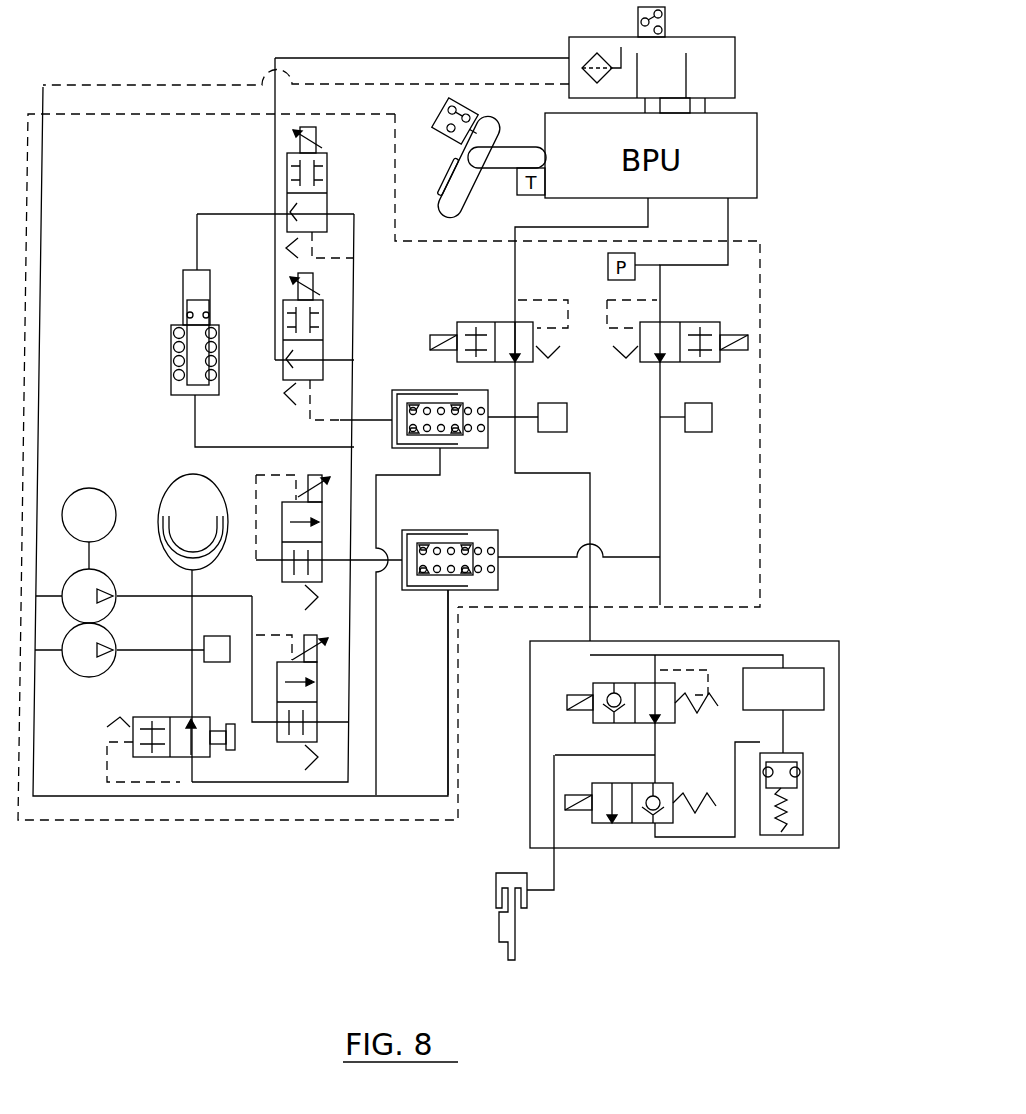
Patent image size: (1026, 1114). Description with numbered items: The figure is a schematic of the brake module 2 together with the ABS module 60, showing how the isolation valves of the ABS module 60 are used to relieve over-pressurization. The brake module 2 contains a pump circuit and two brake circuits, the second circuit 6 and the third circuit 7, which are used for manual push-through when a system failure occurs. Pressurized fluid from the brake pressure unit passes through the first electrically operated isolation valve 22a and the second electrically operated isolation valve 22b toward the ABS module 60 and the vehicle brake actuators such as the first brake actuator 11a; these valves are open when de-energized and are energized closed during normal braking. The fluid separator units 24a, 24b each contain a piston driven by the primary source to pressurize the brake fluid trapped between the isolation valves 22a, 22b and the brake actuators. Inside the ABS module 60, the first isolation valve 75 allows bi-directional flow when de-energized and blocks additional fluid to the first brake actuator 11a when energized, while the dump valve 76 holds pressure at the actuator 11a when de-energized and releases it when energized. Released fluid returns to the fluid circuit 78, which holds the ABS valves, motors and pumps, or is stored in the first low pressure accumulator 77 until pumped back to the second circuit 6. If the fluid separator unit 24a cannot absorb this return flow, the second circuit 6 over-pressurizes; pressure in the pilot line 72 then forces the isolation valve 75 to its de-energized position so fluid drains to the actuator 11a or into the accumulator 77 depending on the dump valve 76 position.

The brake module 2 is at (238, 827).
The second circuit 6 is at (570, 486).
The third circuit 7 is at (674, 551).
The first electrically operated isolation valve 22a is at (470, 322).
The second electrically operated isolation valve 22b is at (712, 322).
The fluid separator unit 24a is at (420, 390).
The fluid separator unit 24b is at (430, 590).
The ABS module 60 is at (840, 678).
The pilot line 72 is at (683, 668).
The first isolation valve 75 is at (613, 683).
The dump valve 76 is at (610, 826).
The first low pressure accumulator 77 is at (805, 803).
The fluid circuit 78 is at (805, 710).
The first brake actuator 11a is at (517, 952).